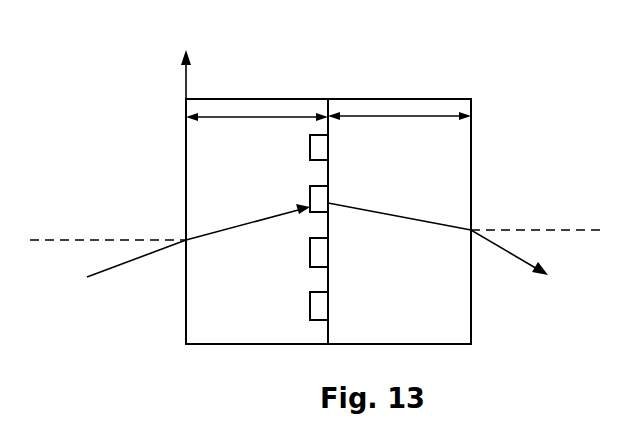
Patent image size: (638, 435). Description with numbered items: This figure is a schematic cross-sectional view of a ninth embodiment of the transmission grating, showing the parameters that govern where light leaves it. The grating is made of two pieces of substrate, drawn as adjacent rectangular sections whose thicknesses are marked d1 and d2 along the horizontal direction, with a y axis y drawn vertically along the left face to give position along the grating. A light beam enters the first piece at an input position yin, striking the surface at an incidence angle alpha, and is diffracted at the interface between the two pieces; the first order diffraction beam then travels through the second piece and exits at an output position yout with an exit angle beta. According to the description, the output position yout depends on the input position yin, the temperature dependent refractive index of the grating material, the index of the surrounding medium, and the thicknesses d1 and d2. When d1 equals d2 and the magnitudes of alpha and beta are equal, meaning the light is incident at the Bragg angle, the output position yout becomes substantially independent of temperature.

The y axis y is at (187, 59).
The thickness of first piece d1 is at (257, 133).
The thickness of second piece d2 is at (399, 132).
The input position yin is at (108, 222).
The output position yout is at (537, 213).
The input angle alpha is at (198, 240).
The output angle beta is at (438, 239).